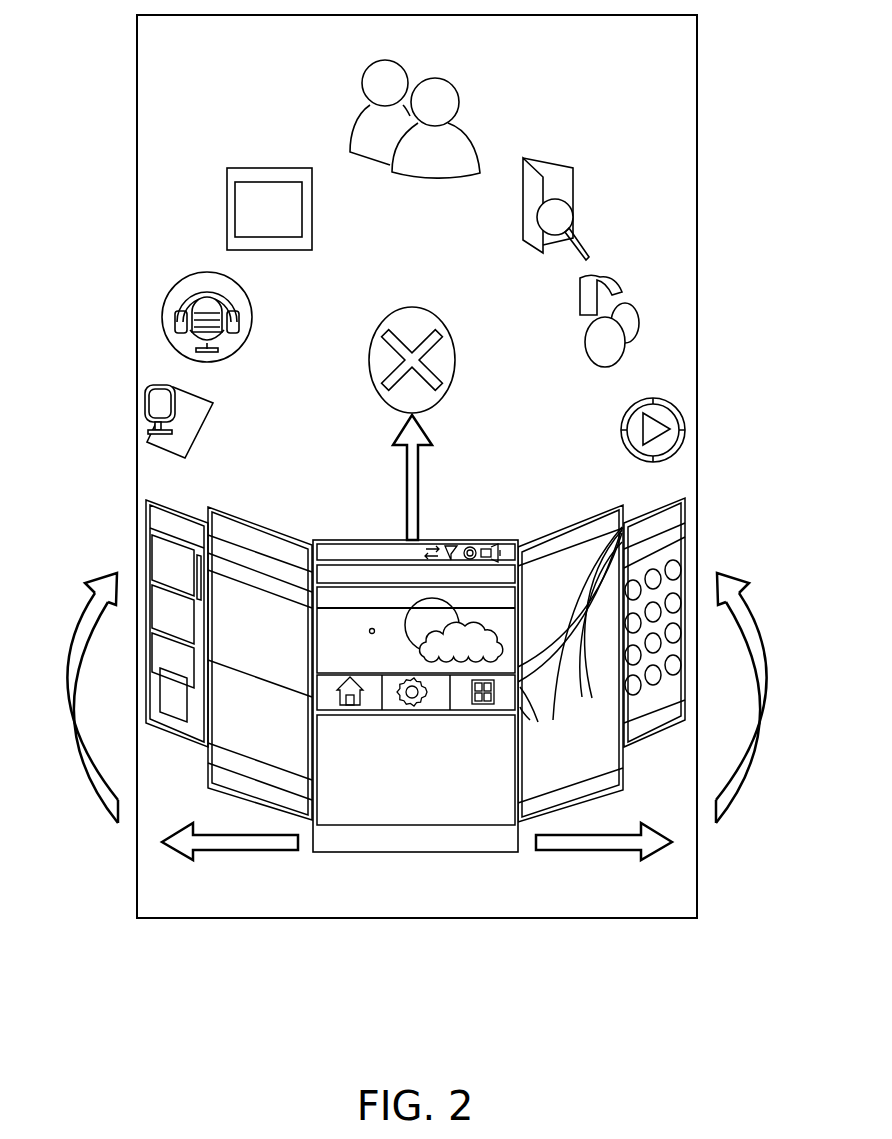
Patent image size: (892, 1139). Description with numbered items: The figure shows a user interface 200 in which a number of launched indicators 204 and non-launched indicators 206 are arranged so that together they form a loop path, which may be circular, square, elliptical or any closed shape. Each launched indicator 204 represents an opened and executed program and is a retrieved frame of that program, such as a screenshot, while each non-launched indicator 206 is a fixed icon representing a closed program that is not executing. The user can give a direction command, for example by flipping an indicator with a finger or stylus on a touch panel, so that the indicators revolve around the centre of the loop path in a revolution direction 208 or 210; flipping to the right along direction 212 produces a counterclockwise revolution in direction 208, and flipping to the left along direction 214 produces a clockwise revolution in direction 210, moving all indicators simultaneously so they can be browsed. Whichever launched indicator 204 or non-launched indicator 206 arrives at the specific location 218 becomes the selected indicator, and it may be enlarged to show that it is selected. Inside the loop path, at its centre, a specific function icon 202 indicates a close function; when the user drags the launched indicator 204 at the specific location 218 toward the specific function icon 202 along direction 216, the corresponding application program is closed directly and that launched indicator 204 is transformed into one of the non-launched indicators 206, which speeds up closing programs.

The user interface 200 is at (137, 203).
The specific function icon 202 is at (457, 362).
The launched indicator 204 is at (490, 540).
The non-launched indicator 206 is at (460, 100).
The revolution direction 208 is at (738, 800).
The revolution direction 210 is at (96, 800).
The direction 212 is at (590, 850).
The direction 214 is at (244, 850).
The direction 216 is at (406, 489).
The specific location 218 is at (415, 852).